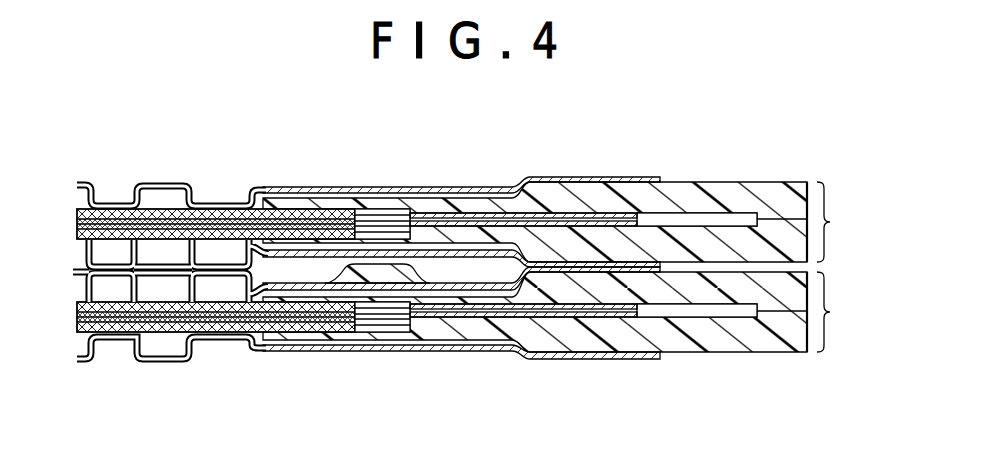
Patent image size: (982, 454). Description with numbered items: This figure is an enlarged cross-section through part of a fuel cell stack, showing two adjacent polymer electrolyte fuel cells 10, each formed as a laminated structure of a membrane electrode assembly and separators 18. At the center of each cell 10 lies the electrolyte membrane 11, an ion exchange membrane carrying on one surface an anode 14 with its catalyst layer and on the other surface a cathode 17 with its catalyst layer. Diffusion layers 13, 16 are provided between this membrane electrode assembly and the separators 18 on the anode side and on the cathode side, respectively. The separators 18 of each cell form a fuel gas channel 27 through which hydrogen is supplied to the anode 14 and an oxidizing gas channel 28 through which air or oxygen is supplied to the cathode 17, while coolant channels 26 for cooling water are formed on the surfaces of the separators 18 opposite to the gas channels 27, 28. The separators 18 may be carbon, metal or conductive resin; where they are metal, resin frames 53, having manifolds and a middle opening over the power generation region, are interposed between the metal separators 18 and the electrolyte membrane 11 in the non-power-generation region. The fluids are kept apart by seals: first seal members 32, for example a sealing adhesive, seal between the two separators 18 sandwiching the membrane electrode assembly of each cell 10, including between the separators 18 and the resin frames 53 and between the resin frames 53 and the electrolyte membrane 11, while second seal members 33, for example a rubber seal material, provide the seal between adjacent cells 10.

The polymer electrolyte fuel cell 10 is at (565, 268).
The electrolyte membrane 11 is at (79, 206).
The diffusion layer 13 is at (160, 211).
The anode 14 is at (140, 208).
The diffusion layer 16 is at (114, 213).
The cathode 17 is at (99, 196).
The separator 18 is at (338, 250).
The coolant channel 26 is at (241, 334).
The fuel gas channel 27 is at (179, 197).
The oxidizing gas channel 28 is at (196, 207).
The first seal member 32 is at (509, 224).
The second seal member 33 is at (379, 272).
The resin frame 53 is at (462, 218).